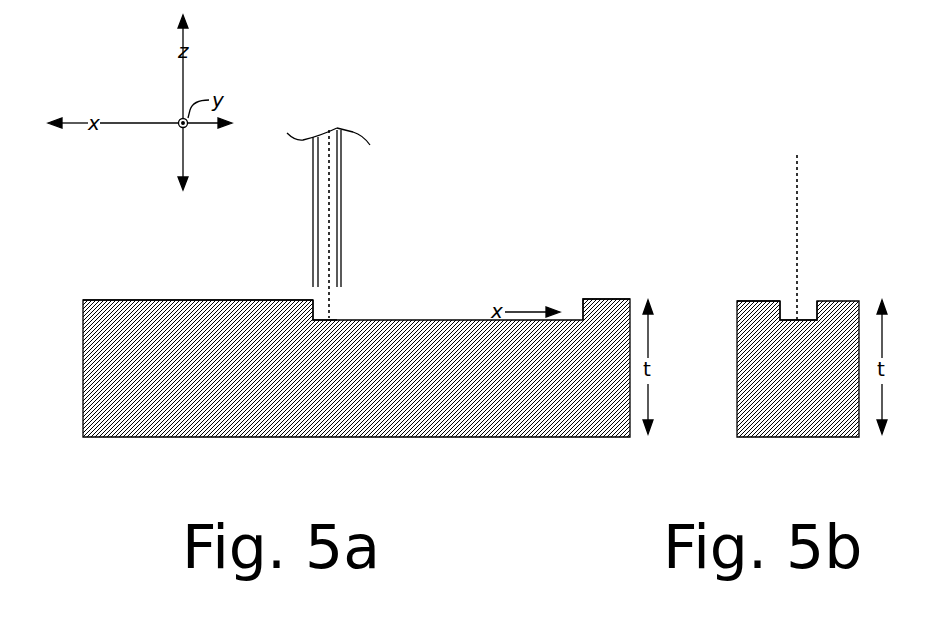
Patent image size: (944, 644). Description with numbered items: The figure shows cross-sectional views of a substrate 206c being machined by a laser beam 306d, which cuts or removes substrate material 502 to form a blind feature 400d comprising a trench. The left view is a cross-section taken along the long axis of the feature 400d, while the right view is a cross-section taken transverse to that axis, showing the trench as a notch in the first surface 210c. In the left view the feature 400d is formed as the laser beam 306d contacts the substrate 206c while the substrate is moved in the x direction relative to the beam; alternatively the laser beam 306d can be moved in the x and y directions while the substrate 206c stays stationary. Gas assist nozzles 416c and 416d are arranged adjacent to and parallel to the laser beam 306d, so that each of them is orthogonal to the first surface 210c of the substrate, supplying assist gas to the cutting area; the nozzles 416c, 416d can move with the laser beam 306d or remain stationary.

In FIG. 5A, the substrate 206c is at (356, 368).
In FIG. 5B, the substrate 206c is at (798, 369).
In FIG. 5A, the first surface 210c is at (93, 296).
In FIG. 5B, the first surface 210c is at (741, 294).
In FIG. 5A, the substrate material 502 is at (333, 316).
In FIG. 5A, the blind feature 400d is at (498, 257).
In FIG. 5B, the blind feature 400d is at (812, 271).
In FIG. 5A, the laser beam 306d is at (326, 236).
In FIG. 5B, the laser beam 306d is at (795, 202).
In FIG. 5A, the gas assist nozzle 416c is at (313, 192).
In FIG. 5A, the gas assist nozzle 416d is at (340, 192).